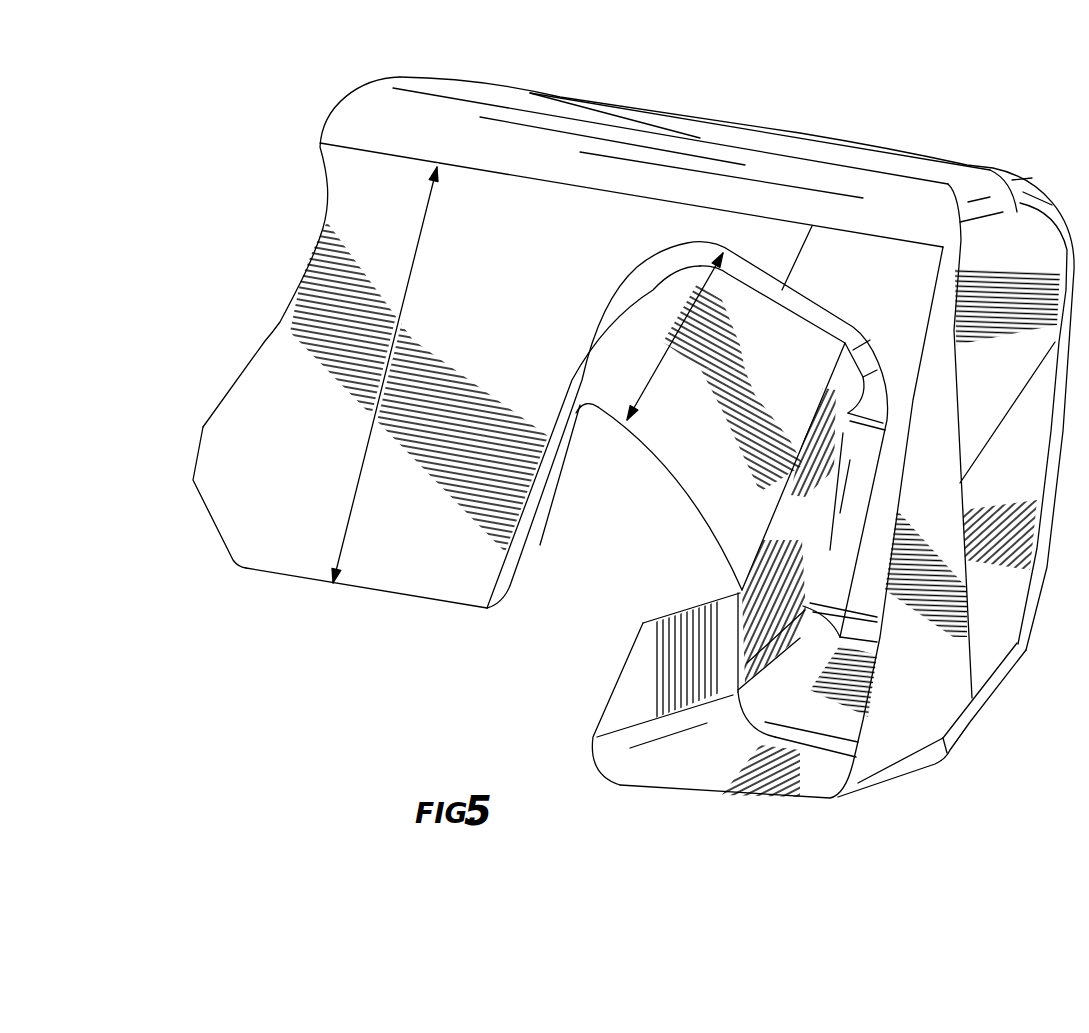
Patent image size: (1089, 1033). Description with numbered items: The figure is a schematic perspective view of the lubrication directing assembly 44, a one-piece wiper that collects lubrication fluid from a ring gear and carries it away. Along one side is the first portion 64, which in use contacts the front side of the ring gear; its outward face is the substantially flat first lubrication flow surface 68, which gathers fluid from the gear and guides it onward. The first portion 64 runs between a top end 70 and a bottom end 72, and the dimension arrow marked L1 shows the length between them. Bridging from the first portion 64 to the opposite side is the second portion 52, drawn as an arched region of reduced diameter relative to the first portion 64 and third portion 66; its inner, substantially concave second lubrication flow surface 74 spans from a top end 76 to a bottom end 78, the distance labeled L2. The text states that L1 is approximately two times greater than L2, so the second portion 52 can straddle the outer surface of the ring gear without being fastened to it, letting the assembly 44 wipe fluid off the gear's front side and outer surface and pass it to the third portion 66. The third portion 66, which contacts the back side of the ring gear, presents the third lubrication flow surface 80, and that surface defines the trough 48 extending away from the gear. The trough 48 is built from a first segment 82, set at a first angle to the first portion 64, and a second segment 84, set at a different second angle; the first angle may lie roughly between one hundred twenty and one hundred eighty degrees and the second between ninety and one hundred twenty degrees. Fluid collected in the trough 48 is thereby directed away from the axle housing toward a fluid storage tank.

The lubrication directing assembly 44 is at (777, 64).
The trough 48 is at (693, 783).
The second portion 52 is at (672, 481).
The first portion 64 is at (262, 340).
The third portion 66 is at (593, 782).
The first lubrication flow surface 68 is at (237, 498).
The top end 70 is at (394, 148).
The bottom end 72 is at (300, 573).
The second lubrication flow surface 74 is at (708, 500).
The top end 76 is at (835, 210).
The bottom end 78 is at (627, 433).
The third lubrication flow surface 80 is at (643, 663).
The first segment 82 is at (770, 630).
The second segment 84 is at (620, 705).
The length L1 is at (422, 228).
The length L2 is at (705, 276).